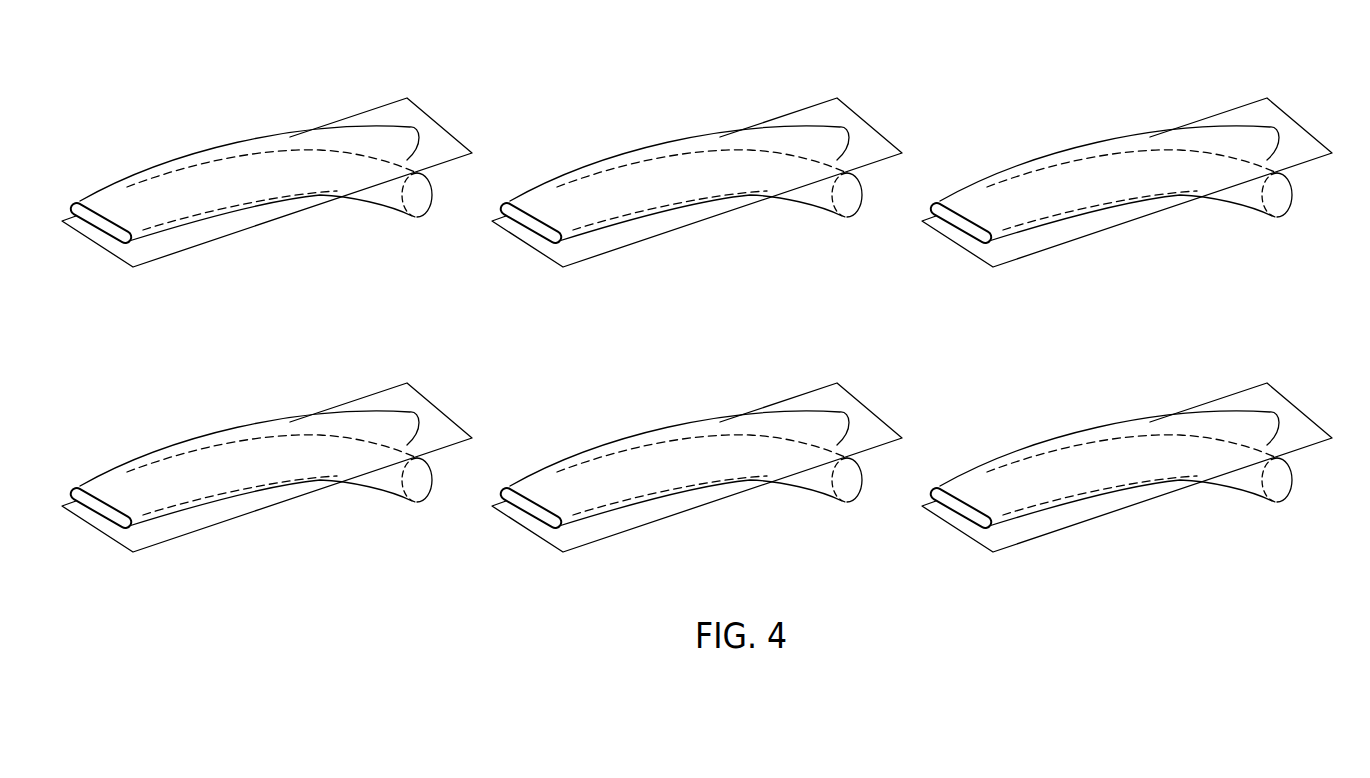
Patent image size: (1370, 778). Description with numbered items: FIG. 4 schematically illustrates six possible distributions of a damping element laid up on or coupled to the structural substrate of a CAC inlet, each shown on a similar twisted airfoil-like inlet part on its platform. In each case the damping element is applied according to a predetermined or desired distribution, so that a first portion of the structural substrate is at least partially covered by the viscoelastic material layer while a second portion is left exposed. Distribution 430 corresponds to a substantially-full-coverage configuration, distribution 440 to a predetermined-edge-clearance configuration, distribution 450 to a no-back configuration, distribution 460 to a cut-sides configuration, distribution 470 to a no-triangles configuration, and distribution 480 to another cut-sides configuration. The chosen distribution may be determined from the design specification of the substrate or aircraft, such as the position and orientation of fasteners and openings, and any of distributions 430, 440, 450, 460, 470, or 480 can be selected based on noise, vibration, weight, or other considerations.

The distribution 430 is at (288, 169).
The distribution 440 is at (717, 173).
The distribution 450 is at (1134, 169).
The distribution 460 is at (273, 454).
The distribution 470 is at (704, 454).
The distribution 480 is at (1134, 454).